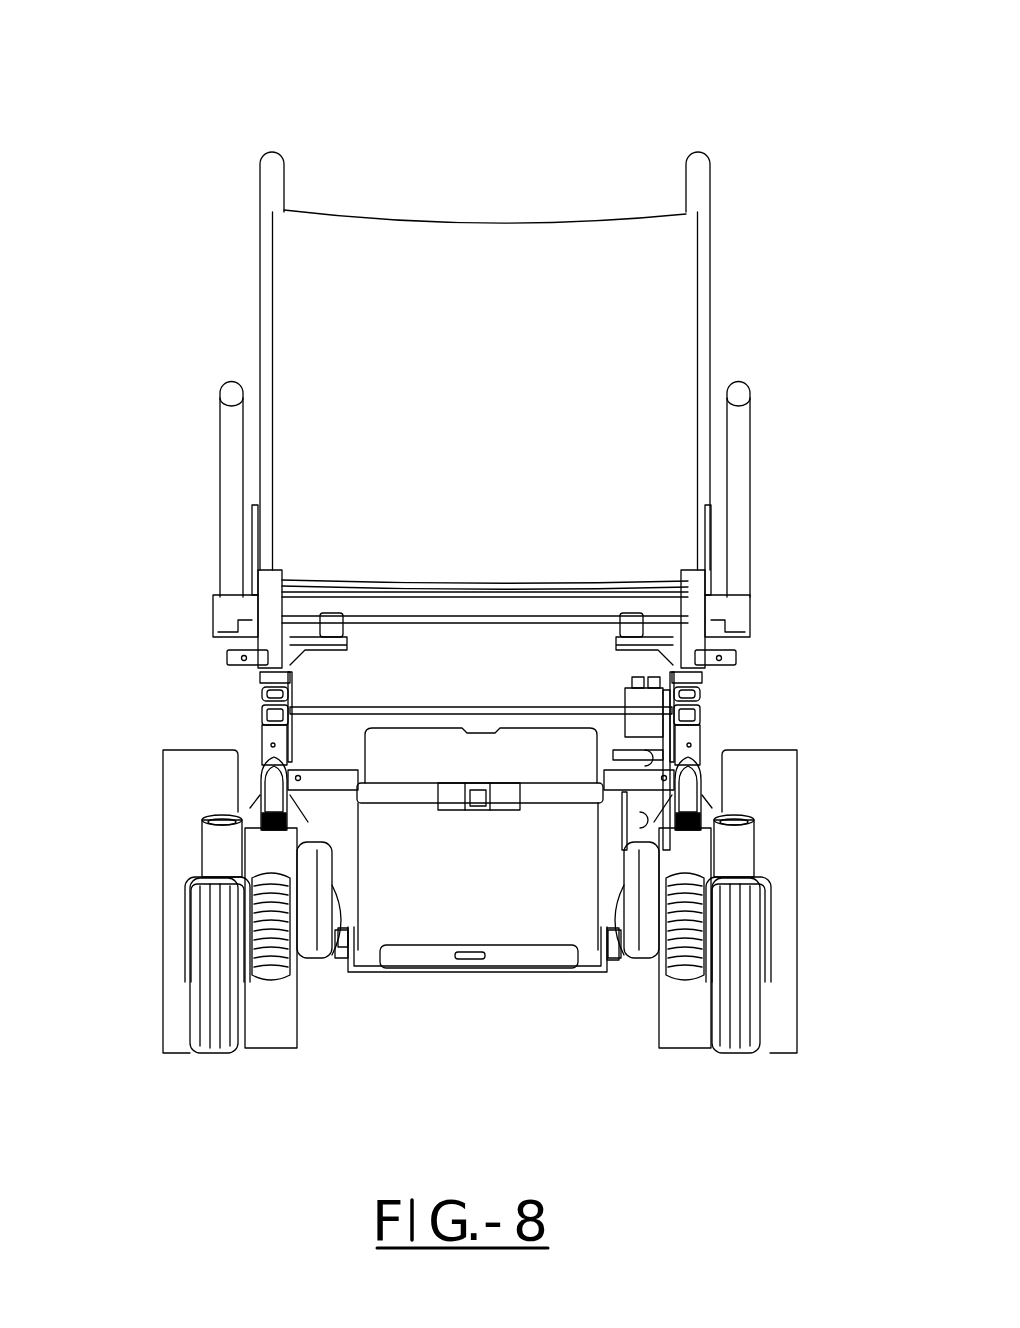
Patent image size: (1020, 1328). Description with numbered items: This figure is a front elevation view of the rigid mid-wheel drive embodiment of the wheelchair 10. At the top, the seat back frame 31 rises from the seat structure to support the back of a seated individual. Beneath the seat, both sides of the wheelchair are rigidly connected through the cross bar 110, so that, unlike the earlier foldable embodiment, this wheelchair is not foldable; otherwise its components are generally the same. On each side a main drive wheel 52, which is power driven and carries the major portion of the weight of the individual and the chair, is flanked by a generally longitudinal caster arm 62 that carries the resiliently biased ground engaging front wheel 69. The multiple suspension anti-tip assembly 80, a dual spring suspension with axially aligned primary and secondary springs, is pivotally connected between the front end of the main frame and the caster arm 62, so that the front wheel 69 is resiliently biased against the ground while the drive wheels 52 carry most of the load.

The wheelchair 10 is at (312, 118).
The seat back frame 31 is at (712, 292).
The cross bar 110 is at (358, 712).
The multiple suspension anti-tip assembly 80 is at (262, 818).
The main drive wheel 52 is at (163, 856).
The caster arm 62 is at (268, 853).
The front wheel 69 is at (220, 1053).